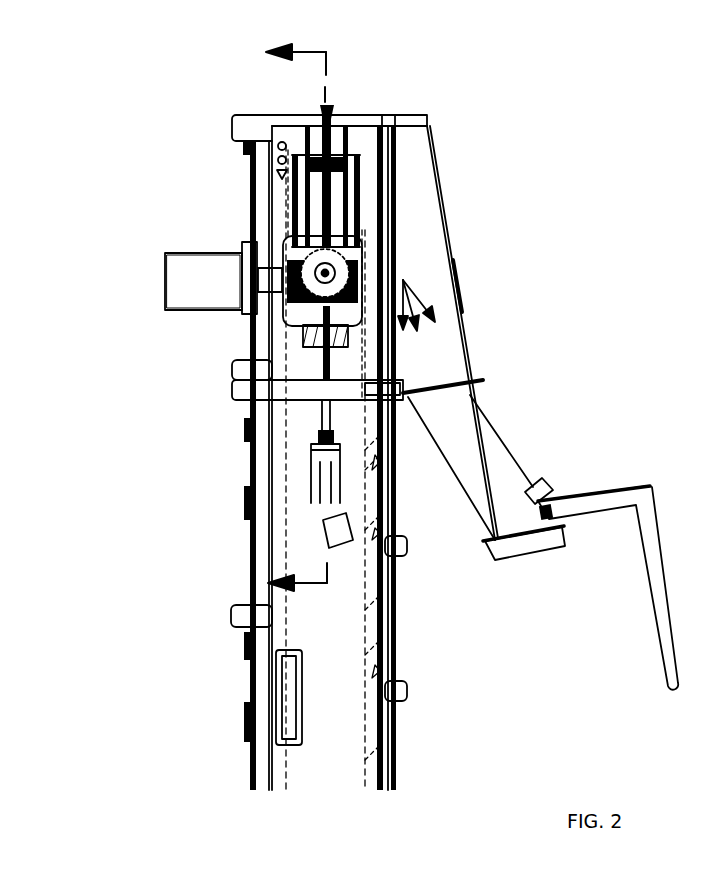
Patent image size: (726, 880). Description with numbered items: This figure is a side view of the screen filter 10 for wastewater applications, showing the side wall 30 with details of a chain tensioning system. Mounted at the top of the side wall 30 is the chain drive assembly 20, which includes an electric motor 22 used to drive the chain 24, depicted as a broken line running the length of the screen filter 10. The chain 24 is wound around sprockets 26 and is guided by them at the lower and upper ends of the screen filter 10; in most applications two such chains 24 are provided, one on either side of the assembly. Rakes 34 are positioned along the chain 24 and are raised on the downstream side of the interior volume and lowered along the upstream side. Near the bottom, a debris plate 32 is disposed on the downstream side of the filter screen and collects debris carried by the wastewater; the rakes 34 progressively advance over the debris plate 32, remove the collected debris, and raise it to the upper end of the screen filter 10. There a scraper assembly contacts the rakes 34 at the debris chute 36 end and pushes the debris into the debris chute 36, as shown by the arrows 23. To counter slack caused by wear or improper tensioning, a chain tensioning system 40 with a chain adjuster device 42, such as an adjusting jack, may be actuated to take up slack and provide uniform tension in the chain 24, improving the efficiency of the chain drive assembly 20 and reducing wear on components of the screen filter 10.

The screen filter 10 is at (138, 636).
The chain drive assembly 20 is at (372, 256).
The electric motor 22 is at (214, 293).
The arrows 23 is at (422, 297).
The chain 24 is at (393, 618).
The sprocket 26 is at (298, 238).
The side wall 30 is at (339, 646).
The debris plate 32 is at (395, 763).
The rakes 34 is at (370, 447).
The debris chute 36 is at (412, 190).
The chain tensioning system 40 is at (340, 366).
The chain adjuster device 42 is at (325, 368).